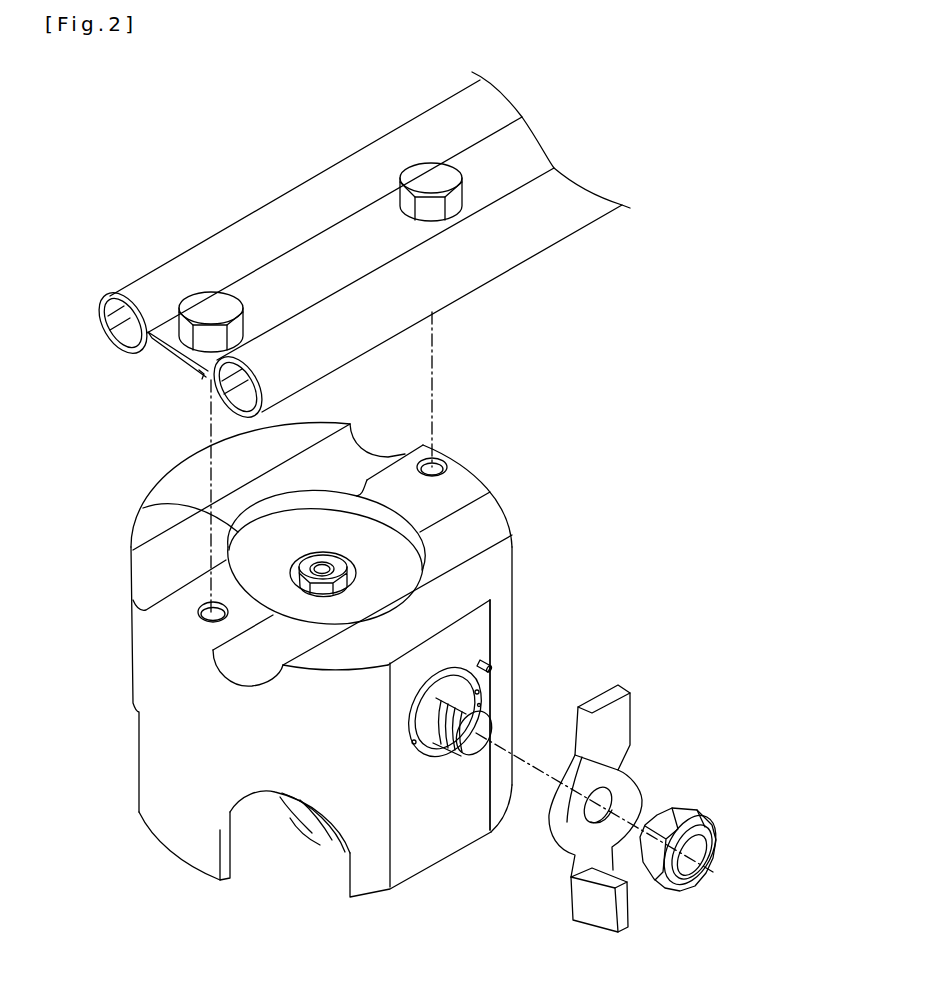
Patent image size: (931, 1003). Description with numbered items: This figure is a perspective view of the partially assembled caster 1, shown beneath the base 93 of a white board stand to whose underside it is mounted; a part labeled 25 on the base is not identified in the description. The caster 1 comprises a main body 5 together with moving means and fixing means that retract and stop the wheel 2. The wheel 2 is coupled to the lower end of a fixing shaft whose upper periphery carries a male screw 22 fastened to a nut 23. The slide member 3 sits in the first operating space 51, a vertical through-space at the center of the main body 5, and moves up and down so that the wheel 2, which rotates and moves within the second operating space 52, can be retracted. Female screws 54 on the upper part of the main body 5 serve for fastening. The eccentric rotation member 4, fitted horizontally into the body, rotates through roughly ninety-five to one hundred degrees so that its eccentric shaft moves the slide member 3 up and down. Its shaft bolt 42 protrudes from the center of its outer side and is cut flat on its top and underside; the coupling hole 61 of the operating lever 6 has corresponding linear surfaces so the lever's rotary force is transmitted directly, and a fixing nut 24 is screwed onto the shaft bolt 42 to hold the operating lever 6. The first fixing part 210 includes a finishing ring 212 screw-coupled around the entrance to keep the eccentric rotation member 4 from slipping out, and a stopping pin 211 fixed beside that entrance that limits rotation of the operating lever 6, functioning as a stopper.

The caster 1 is at (401, 641).
The wheel 2 is at (308, 840).
The slide member 3 is at (357, 531).
The eccentric rotation member 4 is at (448, 800).
The main body 5 is at (274, 869).
The operating lever 6 is at (623, 803).
The male screw 22 is at (318, 562).
The nut 23 is at (337, 560).
The fixing nut 24 is at (667, 888).
The rail bolt 25 is at (205, 308).
The shaft bolt 42 is at (446, 752).
The first operating space 51 is at (143, 508).
The second operating space 52 is at (264, 868).
The female screws 54 is at (198, 613).
The coupling hole 61 is at (618, 805).
The base 93 is at (500, 250).
The first fixing part 210 is at (504, 685).
The stopping pin 211 is at (493, 660).
The finishing ring 212 is at (482, 691).